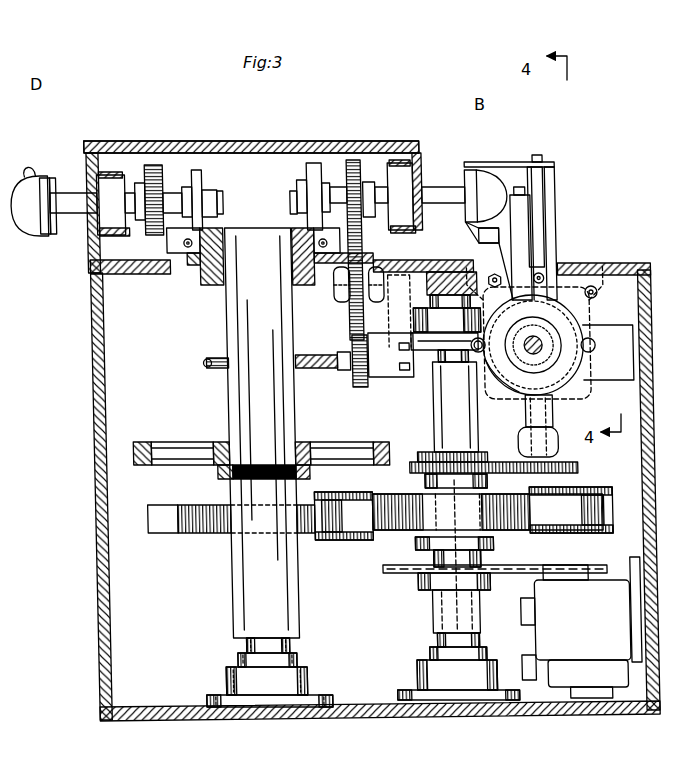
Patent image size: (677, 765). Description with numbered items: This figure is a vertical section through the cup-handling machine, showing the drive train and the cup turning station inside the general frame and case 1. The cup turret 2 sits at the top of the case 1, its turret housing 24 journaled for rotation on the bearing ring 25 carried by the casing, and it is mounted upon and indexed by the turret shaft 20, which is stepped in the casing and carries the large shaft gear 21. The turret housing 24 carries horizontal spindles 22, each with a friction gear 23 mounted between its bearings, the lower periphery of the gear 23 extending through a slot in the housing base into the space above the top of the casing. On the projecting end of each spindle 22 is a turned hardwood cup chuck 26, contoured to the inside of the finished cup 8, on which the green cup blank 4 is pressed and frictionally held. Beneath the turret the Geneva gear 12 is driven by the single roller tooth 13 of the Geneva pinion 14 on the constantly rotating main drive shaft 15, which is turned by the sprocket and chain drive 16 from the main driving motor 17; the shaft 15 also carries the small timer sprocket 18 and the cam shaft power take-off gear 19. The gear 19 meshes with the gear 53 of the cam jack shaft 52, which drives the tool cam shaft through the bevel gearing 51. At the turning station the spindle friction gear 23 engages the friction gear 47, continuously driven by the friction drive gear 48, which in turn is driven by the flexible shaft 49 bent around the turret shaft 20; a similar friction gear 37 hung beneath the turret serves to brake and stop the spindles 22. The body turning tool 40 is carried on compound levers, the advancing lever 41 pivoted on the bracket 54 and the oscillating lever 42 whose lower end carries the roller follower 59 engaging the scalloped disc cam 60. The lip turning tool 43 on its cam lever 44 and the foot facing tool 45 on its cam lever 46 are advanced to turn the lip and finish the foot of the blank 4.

The general frame and case 1 is at (100, 702).
The cup turret 2 is at (330, 148).
The cup blank 4 is at (498, 170).
The finished cup 8 is at (28, 222).
The Geneva gear 12 is at (182, 534).
The single roller tooth 13 is at (606, 510).
The Geneva pinion 14 is at (342, 540).
The main drive shaft 15 is at (432, 616).
The sprocket and chain drive 16 is at (536, 565).
The main driving motor 17 is at (600, 630).
The small timer sprocket 18 is at (446, 317).
The cam shaft power take-off gear 19 is at (413, 463).
The turret shaft 20 is at (229, 626).
The shaft gear 21 is at (142, 467).
The spindle 22 is at (62, 192).
The friction gear 23 is at (362, 163).
The turret housing 24 is at (222, 141).
The bearing ring 25 is at (94, 266).
The cup chuck 26 is at (47, 178).
The friction gear 37 is at (213, 298).
The body turning tool 40 is at (478, 236).
The advancing lever 41 is at (572, 288).
The oscillating lever 42 is at (493, 256).
The lip turning tool 43 is at (472, 170).
The cam lever 44 is at (558, 196).
The foot facing tool 45 is at (511, 198).
The cam lever 46 is at (520, 245).
The friction gear 47 is at (354, 318).
The friction drive gear 48 is at (354, 382).
The flexible shaft 49 is at (212, 370).
The bevel gearing 51 is at (588, 360).
The cam jack shaft 52 is at (521, 432).
The gear 53 is at (580, 468).
The bracket 54 is at (658, 268).
The roller follower 59 is at (483, 356).
The scalloped disc cam 60 is at (500, 378).